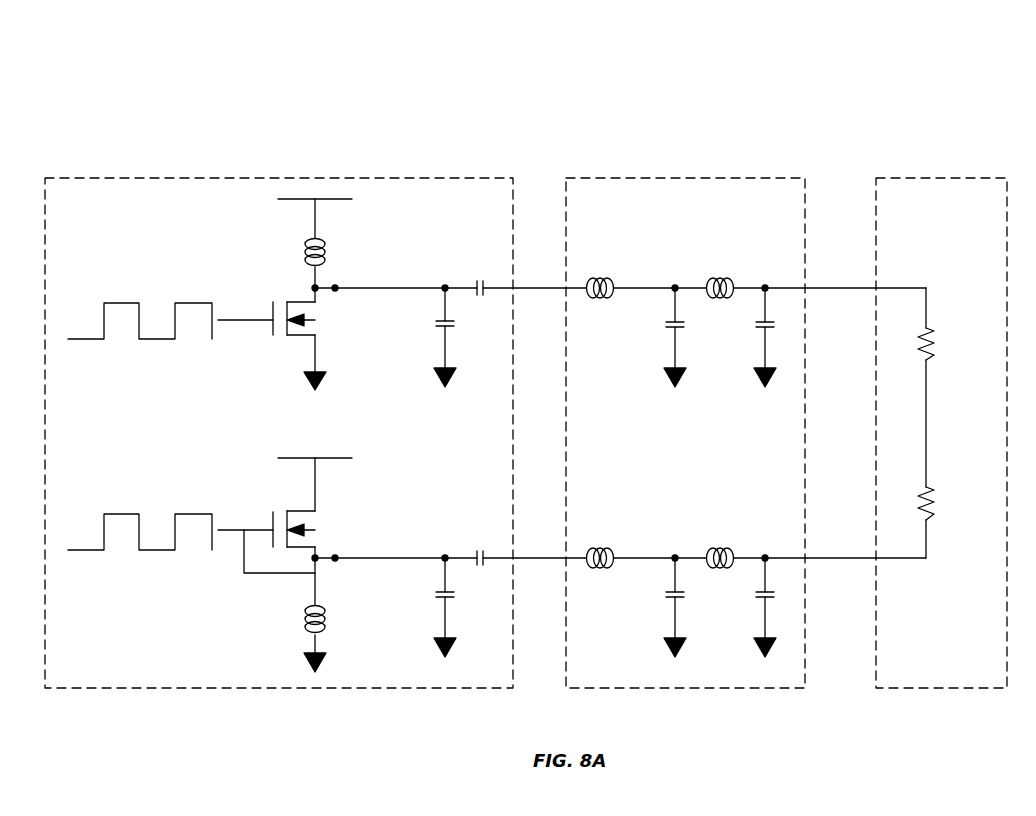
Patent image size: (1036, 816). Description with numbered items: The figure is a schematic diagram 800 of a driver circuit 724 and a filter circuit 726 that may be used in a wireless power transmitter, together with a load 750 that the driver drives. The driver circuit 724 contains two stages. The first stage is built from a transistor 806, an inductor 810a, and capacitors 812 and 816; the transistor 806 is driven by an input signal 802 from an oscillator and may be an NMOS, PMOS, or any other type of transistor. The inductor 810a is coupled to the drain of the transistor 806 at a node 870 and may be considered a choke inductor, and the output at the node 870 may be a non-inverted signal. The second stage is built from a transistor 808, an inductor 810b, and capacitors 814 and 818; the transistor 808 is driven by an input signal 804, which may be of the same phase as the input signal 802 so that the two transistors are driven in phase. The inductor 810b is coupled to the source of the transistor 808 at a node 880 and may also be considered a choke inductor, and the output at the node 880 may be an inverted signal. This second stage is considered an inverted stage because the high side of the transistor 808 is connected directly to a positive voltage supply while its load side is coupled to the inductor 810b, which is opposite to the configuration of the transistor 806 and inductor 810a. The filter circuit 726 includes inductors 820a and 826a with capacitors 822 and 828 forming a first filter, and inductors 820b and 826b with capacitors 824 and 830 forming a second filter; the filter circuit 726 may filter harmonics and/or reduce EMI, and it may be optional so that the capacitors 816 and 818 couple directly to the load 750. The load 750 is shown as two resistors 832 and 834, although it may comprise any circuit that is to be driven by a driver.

The schematic diagram 800 is at (174, 77).
The driver circuit 724 is at (423, 178).
The filter circuit 726 is at (733, 178).
The load 750 is at (933, 178).
The input signal 802 is at (119, 303).
The input signal 804 is at (119, 513).
The transistor 806 is at (300, 298).
The transistor 808 is at (300, 510).
The inductor 810a is at (322, 245).
The inductor 810b is at (322, 612).
The capacitor 812 is at (450, 328).
The capacitor 814 is at (450, 598).
The capacitor 816 is at (473, 283).
The capacitor 818 is at (473, 553).
The inductor 820a is at (612, 280).
The inductor 820b is at (612, 550).
The capacitor 822 is at (670, 328).
The capacitor 824 is at (670, 598).
The inductor 826a is at (713, 280).
The inductor 826b is at (713, 550).
The capacitor 828 is at (760, 328).
The capacitor 830 is at (760, 598).
The resistor 832 is at (928, 332).
The resistor 834 is at (928, 490).
The node 870 is at (337, 282).
The node 880 is at (337, 552).